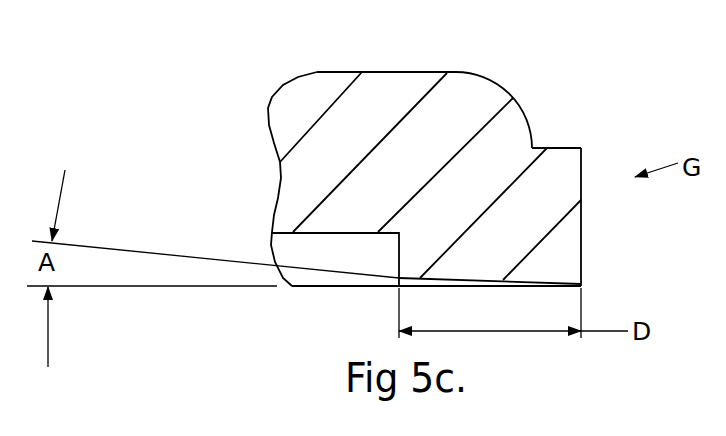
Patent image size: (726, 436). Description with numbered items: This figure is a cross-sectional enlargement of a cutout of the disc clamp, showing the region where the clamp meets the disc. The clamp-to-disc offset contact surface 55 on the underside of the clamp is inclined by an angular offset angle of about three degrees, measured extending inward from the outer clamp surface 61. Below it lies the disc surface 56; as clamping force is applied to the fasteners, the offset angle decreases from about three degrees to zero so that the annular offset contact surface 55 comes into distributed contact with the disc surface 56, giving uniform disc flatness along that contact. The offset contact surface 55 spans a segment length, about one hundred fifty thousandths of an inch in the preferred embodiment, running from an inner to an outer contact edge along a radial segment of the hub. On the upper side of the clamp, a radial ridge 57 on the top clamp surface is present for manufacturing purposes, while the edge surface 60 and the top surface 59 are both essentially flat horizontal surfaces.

The clamp-to-disc offset contact surface 55 is at (430, 278).
The disc surface 56 is at (320, 287).
The radial ridge 57 is at (513, 98).
The top surface 59 is at (418, 72).
The edge surface 60 is at (570, 148).
The outer clamp surface 61 is at (582, 220).